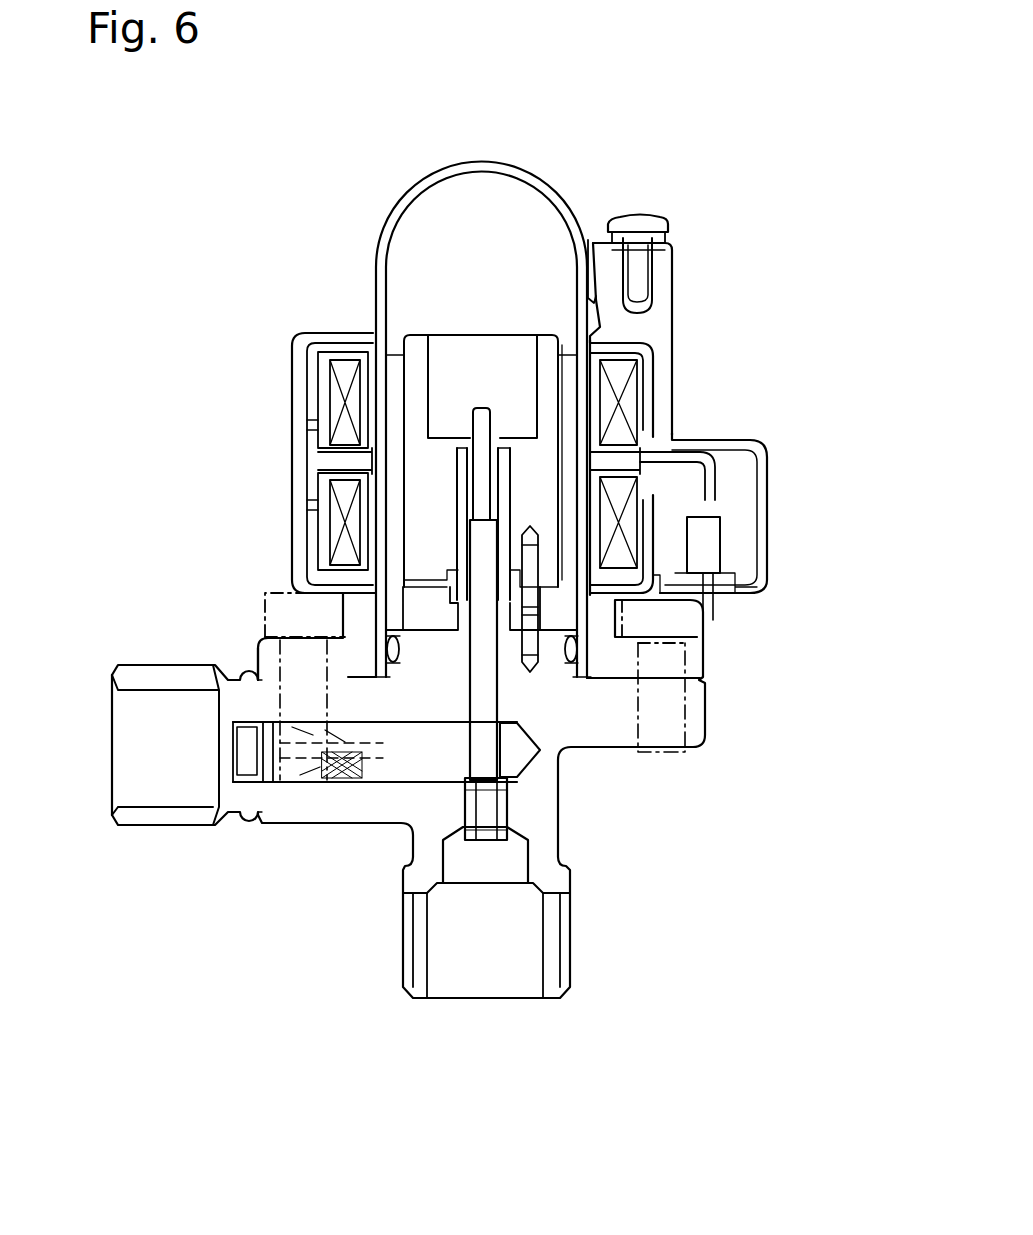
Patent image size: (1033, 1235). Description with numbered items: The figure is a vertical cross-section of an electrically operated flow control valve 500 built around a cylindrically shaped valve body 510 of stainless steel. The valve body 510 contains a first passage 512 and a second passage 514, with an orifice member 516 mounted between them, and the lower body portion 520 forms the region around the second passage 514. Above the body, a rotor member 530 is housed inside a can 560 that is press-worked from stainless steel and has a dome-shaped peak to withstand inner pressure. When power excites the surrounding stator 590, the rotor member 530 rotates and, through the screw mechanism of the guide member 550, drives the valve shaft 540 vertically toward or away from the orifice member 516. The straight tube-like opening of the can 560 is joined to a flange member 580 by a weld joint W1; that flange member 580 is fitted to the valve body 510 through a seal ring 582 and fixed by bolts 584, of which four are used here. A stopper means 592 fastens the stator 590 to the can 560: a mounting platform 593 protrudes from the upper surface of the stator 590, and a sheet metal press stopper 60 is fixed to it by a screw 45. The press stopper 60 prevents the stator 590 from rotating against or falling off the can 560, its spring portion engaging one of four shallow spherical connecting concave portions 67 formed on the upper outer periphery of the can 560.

The electrically operated flow control valve 500 is at (764, 352).
The valve body 510 is at (537, 828).
The first passage 512 is at (163, 745).
The second passage 514 is at (498, 975).
The orifice member 516 is at (463, 812).
The body portion 520 is at (623, 677).
The rotor member 530 is at (457, 286).
The valve shaft 540 is at (487, 703).
The guide member 550 is at (463, 542).
The can 560 is at (532, 172).
The flange member 580 is at (270, 657).
The seal ring 582 is at (387, 643).
The bolts 584 is at (675, 622).
The stator 590 is at (298, 405).
The stopper means 592 is at (684, 251).
The mounting platform 593 is at (673, 310).
The press stopper 60 is at (589, 226).
The connecting concave portions 67 is at (584, 281).
The screw 45 is at (638, 211).
The weld joint W1 is at (587, 680).